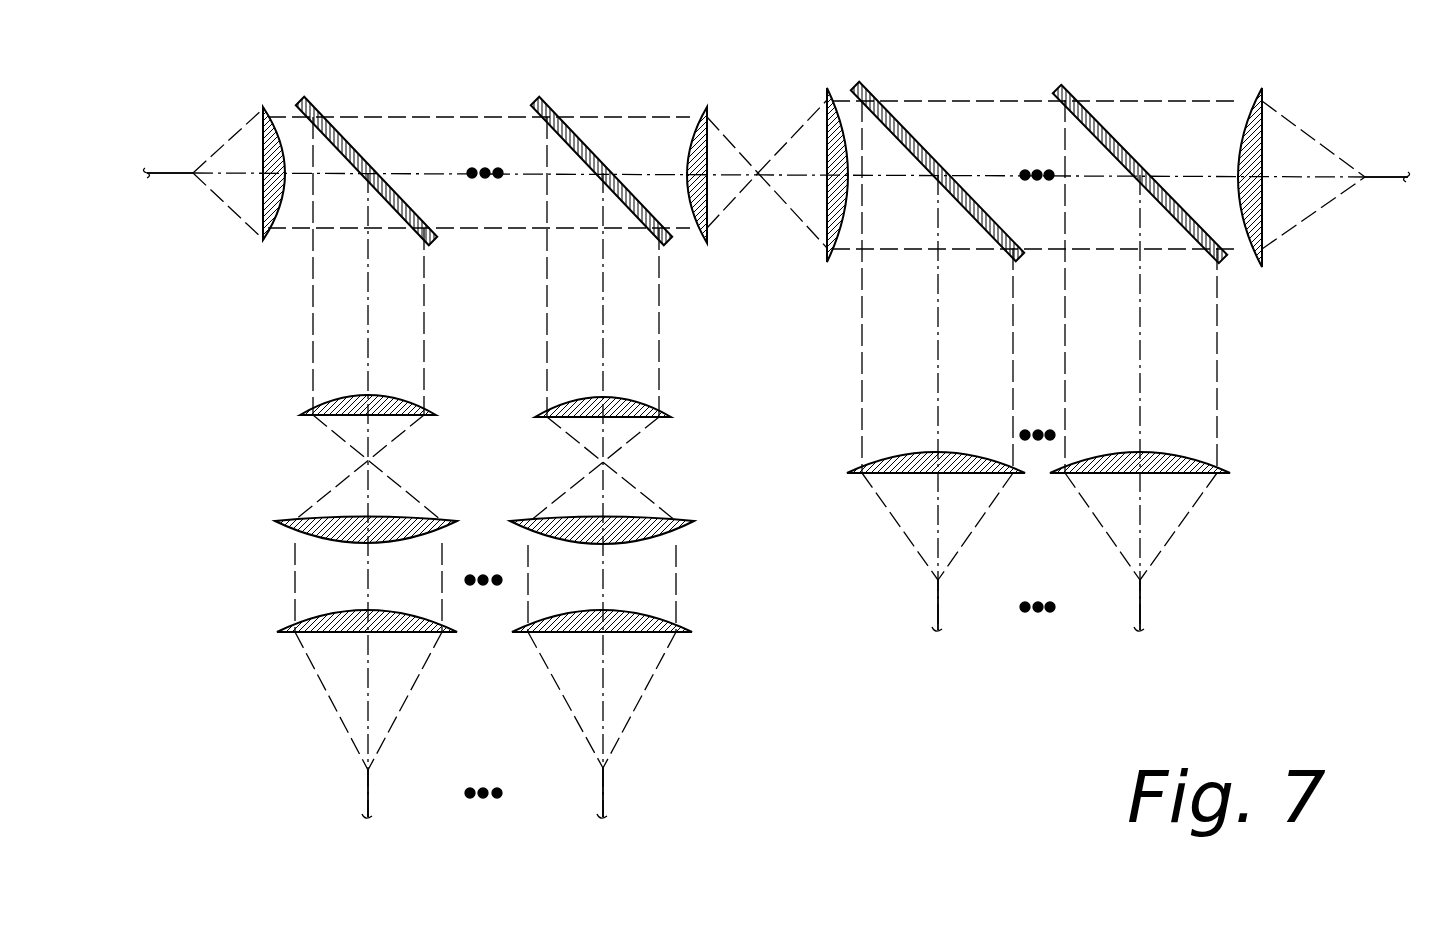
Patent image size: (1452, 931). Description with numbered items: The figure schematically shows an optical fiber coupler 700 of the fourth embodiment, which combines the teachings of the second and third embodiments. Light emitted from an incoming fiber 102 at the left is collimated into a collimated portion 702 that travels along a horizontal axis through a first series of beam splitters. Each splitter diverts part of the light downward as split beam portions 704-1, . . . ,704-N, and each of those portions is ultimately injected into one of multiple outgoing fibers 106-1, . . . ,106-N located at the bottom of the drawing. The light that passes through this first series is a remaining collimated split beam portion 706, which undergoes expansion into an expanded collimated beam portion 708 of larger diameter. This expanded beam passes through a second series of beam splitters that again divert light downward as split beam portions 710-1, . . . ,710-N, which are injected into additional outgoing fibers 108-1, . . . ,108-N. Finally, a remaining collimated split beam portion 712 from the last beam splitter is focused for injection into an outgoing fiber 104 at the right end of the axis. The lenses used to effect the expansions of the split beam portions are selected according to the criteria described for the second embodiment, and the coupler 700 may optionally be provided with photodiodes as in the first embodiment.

The coupler 700 is at (776, 426).
The incoming fiber 102 is at (173, 170).
The outgoing fiber 104 is at (1384, 176).
The collimated portion 702 is at (282, 113).
The split beam portion 704-1 is at (313, 328).
The split beam portion 704-N is at (660, 330).
The remaining collimated split beam portion 706 is at (691, 108).
The expanded collimated beam portion 708 is at (839, 97).
The split beam portion 710-1 is at (862, 329).
The split beam portion 710-N is at (1217, 338).
The remaining collimated split beam portion 712 is at (1248, 97).
The outgoing fiber 106-1 is at (366, 797).
The outgoing fiber 106-N is at (603, 797).
The outgoing fiber 108-1 is at (936, 603).
The outgoing fiber 108-N is at (1142, 608).